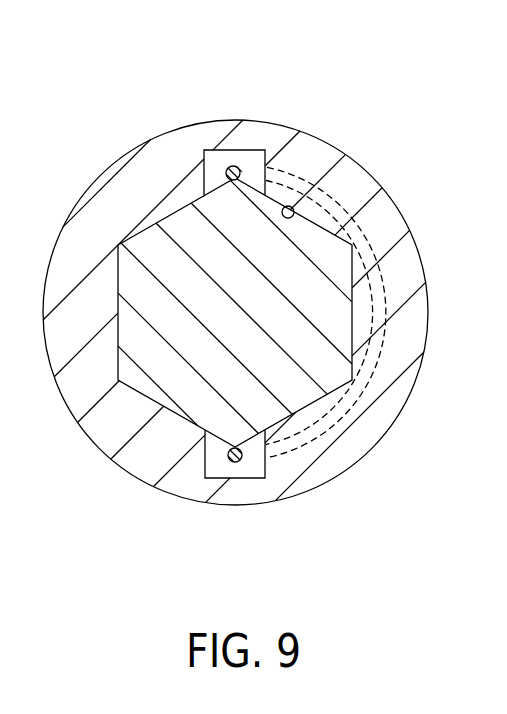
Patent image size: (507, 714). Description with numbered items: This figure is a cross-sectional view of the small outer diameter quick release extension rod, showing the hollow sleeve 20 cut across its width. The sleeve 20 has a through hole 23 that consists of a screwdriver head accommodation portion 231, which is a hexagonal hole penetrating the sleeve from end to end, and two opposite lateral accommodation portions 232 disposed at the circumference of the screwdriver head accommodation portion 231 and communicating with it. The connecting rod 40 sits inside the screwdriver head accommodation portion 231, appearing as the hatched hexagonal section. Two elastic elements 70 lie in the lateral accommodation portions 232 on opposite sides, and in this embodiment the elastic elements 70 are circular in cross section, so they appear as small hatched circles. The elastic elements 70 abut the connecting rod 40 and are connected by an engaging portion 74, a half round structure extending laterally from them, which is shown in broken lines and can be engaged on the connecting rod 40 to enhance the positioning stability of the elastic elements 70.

The sleeve 20 is at (397, 425).
The through hole 23 is at (367, 89).
The screwdriver head accommodation portion 231 is at (290, 206).
The lateral accommodation portion 232 is at (247, 151).
The connecting rod 40 is at (356, 315).
The elastic element 70 is at (226, 160).
The engaging portion 74 is at (354, 192).